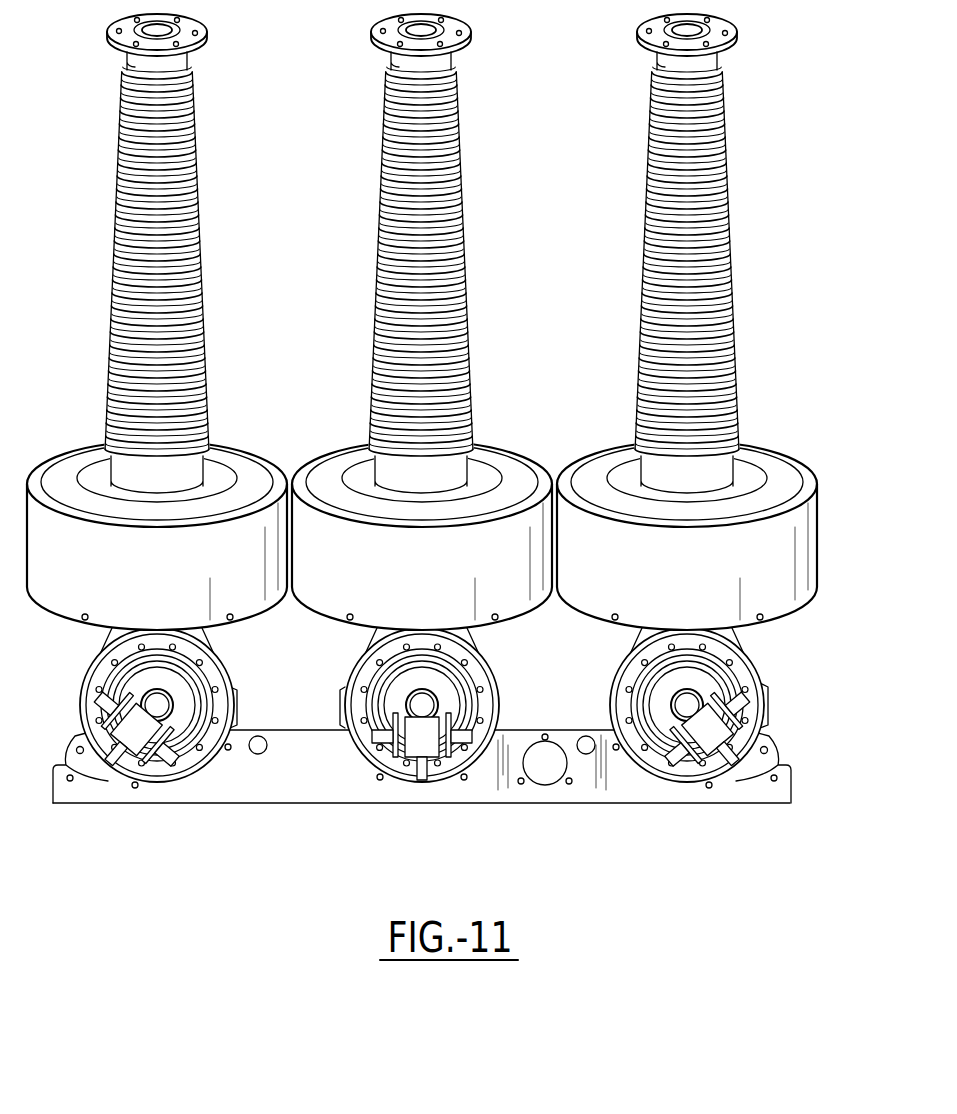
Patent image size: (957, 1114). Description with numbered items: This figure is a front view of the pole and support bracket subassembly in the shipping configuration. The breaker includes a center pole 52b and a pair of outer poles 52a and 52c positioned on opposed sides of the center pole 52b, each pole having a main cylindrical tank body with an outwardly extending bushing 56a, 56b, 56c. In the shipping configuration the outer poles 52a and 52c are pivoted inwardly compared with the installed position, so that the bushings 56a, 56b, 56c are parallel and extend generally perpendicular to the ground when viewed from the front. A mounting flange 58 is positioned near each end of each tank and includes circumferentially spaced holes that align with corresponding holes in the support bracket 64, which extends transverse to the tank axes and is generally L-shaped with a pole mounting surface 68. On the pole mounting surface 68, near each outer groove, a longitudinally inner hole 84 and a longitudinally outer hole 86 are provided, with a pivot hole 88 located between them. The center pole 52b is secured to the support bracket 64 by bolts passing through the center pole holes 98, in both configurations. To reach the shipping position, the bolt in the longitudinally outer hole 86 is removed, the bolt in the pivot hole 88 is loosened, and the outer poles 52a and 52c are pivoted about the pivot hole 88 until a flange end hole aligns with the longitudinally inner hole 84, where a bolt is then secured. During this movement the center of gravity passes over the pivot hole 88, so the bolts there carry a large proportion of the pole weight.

The outer pole 52a is at (167, 404).
The center pole 52b is at (412, 398).
The outer pole 52c is at (673, 404).
The bushing 56a is at (103, 383).
The bushing 56b is at (370, 390).
The bushing 56c is at (640, 375).
The mounting flange 58 is at (73, 750).
The support bracket 64 is at (421, 789).
The pole mounting surface 68 is at (335, 790).
The longitudinally inner hole 84 is at (228, 750).
The longitudinally outer hole 86 is at (70, 781).
The pivot hole 88 is at (135, 788).
The center pole holes 98 is at (462, 779).